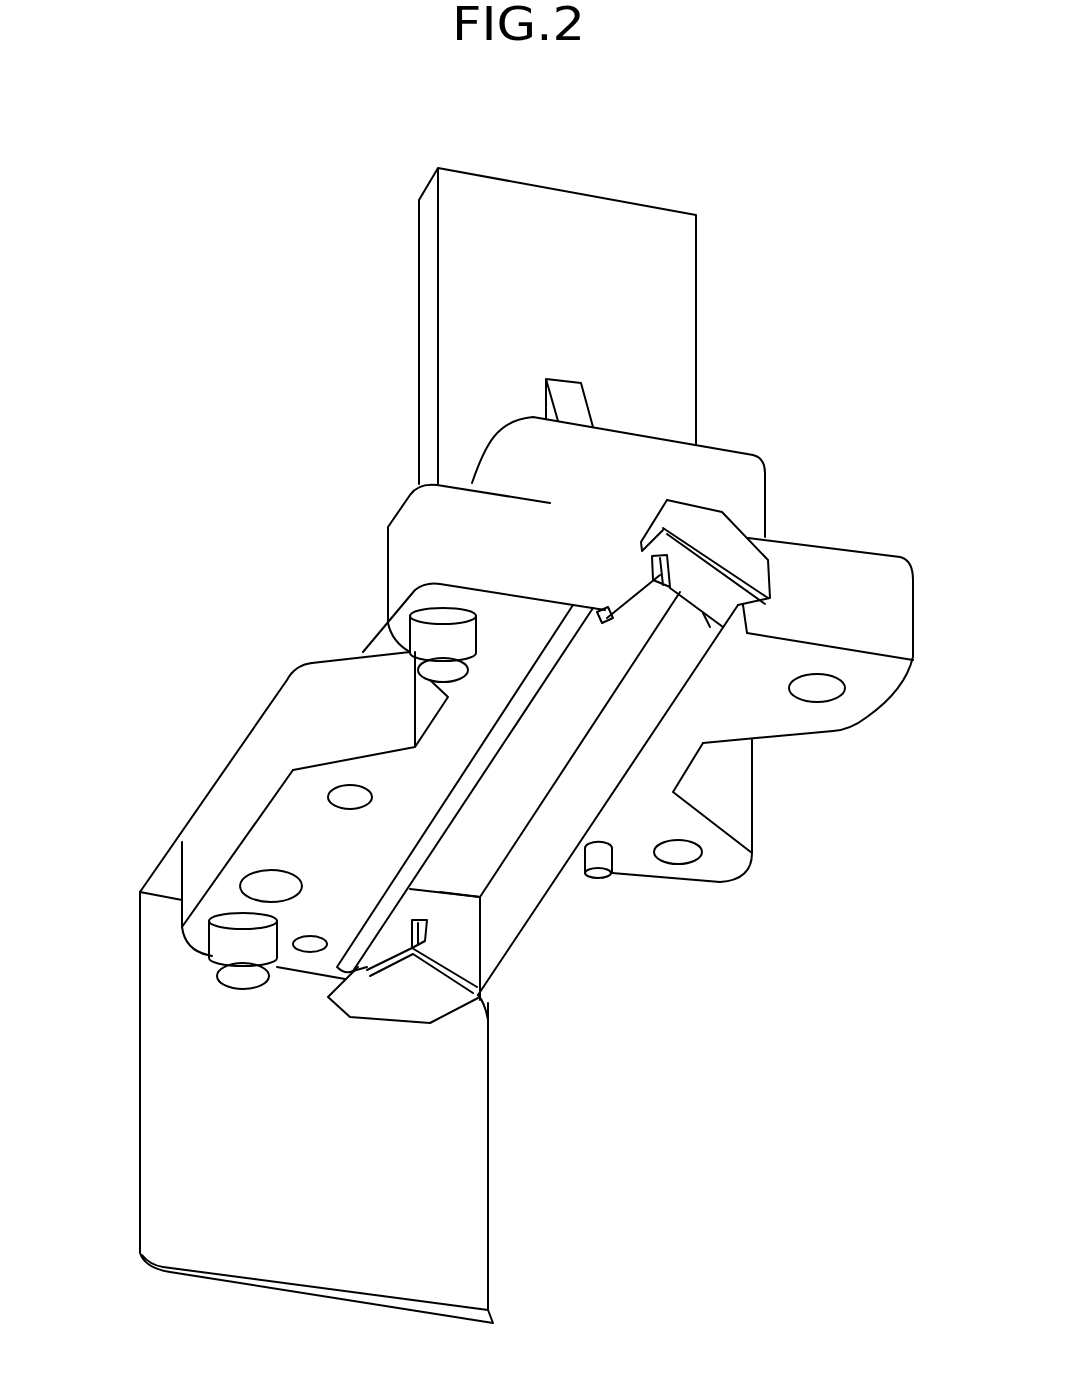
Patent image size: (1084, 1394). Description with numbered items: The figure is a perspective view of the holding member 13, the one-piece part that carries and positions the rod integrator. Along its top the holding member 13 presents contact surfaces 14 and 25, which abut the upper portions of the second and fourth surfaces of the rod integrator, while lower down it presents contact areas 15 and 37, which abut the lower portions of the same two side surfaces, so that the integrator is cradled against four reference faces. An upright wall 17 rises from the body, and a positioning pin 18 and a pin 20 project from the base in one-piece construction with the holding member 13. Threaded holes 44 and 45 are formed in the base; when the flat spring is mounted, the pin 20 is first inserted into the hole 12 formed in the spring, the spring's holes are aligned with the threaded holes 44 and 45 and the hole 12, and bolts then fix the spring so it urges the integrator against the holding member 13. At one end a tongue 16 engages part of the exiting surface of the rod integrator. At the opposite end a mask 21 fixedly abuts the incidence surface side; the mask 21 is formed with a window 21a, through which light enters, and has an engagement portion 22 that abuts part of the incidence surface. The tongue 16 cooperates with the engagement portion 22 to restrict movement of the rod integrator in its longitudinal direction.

The hole 12 is at (568, 887).
The holding member 13 is at (823, 577).
The contact surface 14 is at (710, 627).
The contact area 15 is at (446, 967).
The tongue 16 is at (733, 640).
The wall 17 is at (682, 350).
The positioning pin 18 is at (427, 633).
The pin 20 is at (603, 878).
The mask 21 is at (473, 1237).
The window 21a is at (363, 998).
The engagement portion 22 is at (385, 1023).
The contact surface 25 is at (621, 612).
The contact area 37 is at (390, 968).
The threaded hole 44 is at (680, 853).
The threaded hole 45 is at (348, 797).